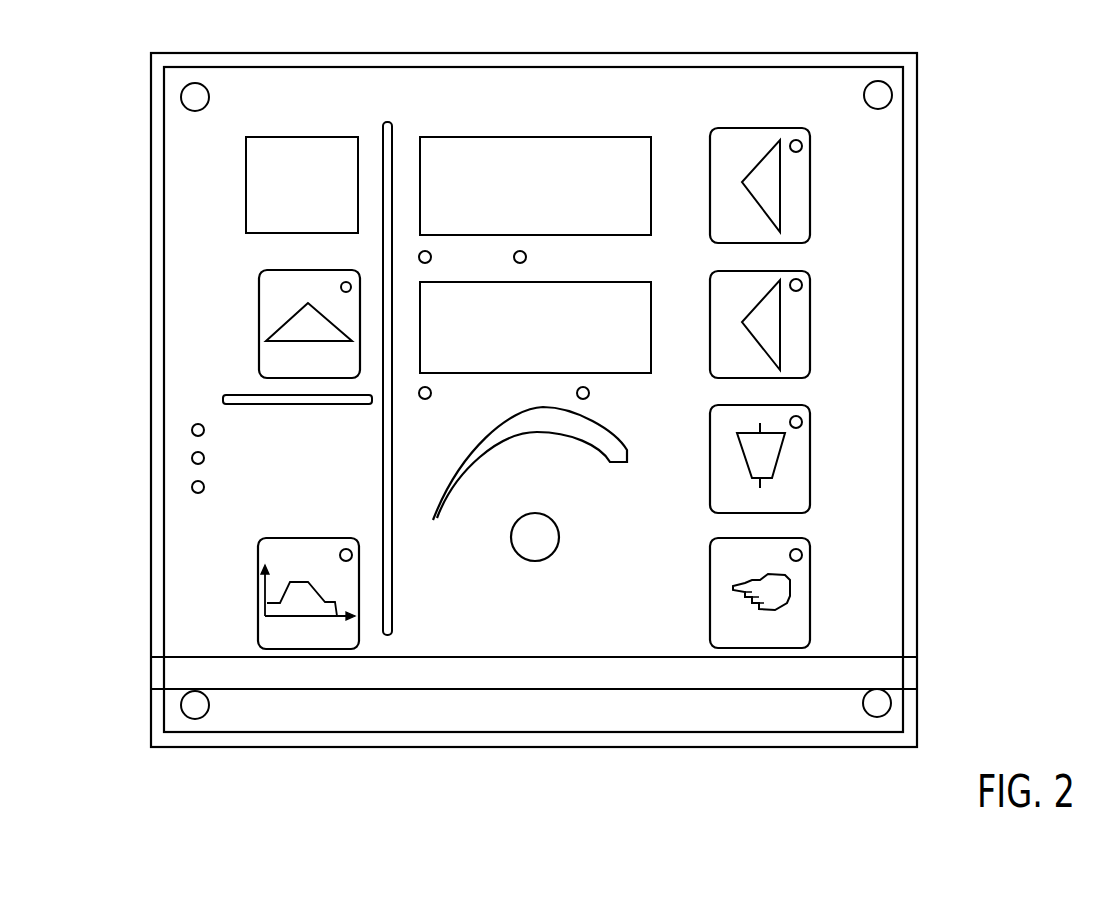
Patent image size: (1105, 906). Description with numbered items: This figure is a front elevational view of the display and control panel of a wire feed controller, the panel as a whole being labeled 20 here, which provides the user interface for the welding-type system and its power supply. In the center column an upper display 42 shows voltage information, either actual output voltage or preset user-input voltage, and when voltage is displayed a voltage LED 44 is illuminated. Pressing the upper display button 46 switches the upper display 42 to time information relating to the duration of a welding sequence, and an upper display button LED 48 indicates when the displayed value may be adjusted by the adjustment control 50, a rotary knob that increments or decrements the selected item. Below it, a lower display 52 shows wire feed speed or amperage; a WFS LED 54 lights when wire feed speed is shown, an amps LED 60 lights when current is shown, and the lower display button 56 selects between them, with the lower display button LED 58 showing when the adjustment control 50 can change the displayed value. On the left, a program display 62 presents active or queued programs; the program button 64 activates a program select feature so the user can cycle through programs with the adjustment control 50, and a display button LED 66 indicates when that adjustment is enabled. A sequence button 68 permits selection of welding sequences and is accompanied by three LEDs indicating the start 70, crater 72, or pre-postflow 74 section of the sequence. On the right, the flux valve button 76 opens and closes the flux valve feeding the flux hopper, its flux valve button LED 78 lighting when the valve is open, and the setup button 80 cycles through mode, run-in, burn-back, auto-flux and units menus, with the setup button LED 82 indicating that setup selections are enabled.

The front panel of welding power supply 20 is at (948, 51).
The upper display 42 is at (501, 148).
The voltage LED 44 is at (429, 262).
The upper display button 46 is at (800, 195).
The upper display button LED 48 is at (803, 145).
The adjustment control 50 is at (520, 251).
The lower display 52 is at (546, 333).
The WFS LED 54 is at (428, 399).
The lower display button 56 is at (800, 330).
The lower display button LED 58 is at (803, 284).
The amps LED 60 is at (588, 398).
The program display 62 is at (264, 184).
The program button 64 is at (270, 293).
The display button LED 66 is at (341, 287).
The sequence button 68 is at (272, 627).
The start LED 70 is at (192, 430).
The crater LED 72 is at (192, 458).
The pre-postflow LED 74 is at (192, 487).
The flux valve button 76 is at (798, 484).
The flux valve button LED 78 is at (803, 420).
The setup button 80 is at (800, 614).
The setup button LED 82 is at (803, 553).